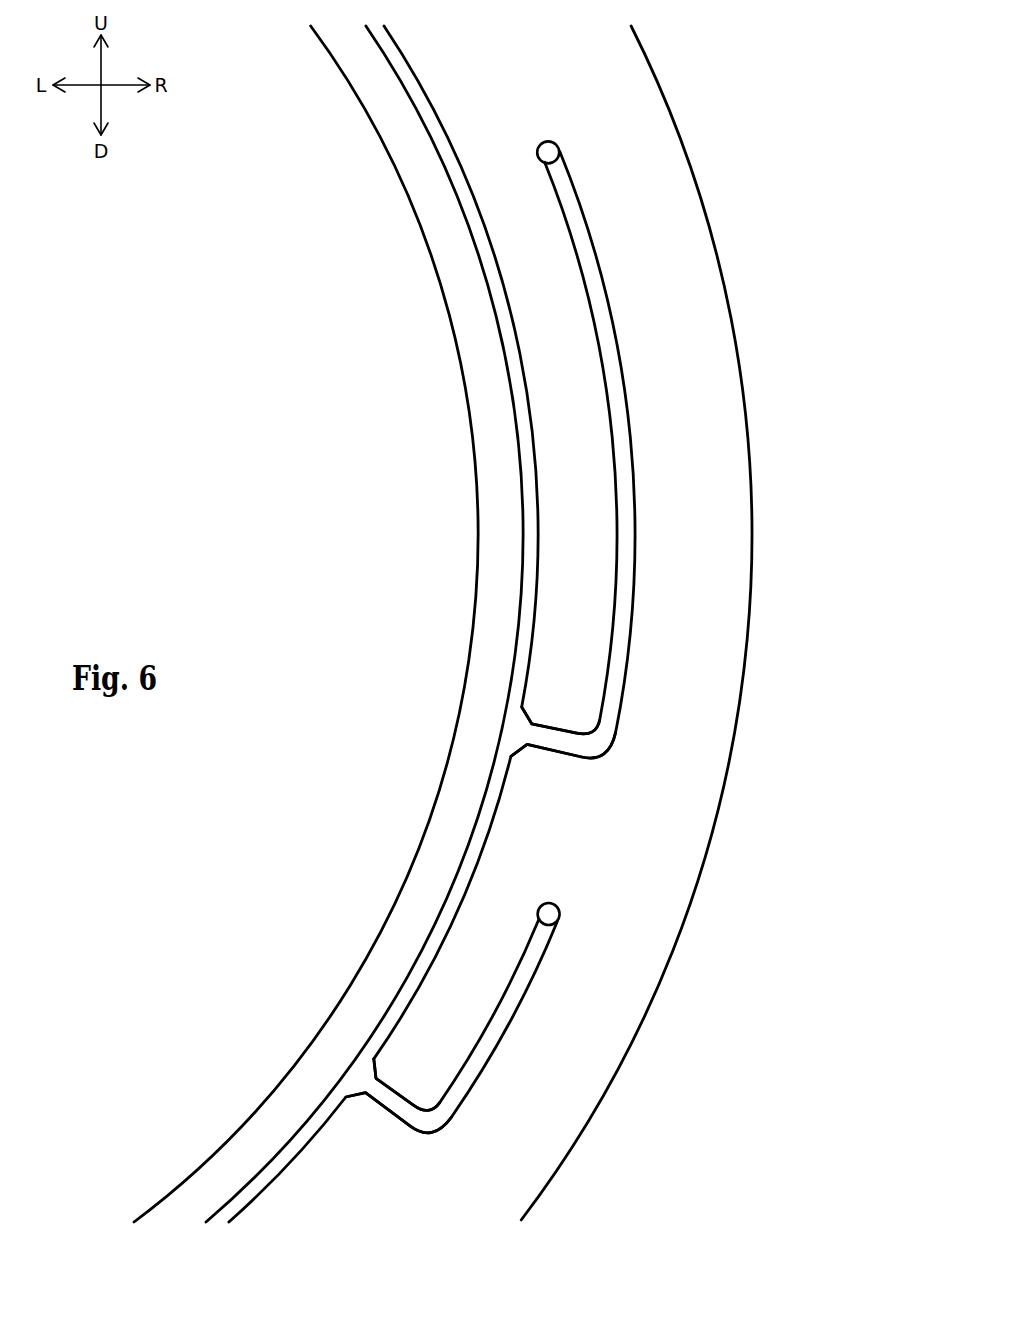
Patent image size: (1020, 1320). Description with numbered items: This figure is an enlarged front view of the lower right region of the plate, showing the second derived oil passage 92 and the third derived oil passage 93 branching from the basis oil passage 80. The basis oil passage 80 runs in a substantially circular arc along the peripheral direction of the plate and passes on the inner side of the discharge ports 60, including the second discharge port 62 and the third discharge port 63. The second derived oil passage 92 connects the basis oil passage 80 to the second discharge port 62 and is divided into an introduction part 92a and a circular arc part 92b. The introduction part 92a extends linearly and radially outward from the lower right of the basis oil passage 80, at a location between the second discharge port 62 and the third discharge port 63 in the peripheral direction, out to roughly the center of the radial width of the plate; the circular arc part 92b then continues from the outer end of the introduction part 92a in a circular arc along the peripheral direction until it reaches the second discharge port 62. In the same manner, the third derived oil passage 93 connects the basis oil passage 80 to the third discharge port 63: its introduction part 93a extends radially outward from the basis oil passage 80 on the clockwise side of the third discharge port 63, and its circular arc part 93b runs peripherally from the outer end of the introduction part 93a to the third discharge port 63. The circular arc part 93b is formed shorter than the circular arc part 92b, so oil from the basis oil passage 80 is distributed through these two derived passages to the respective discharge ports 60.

The discharge ports 60 is at (683, 492).
The second discharge port 62 is at (547, 141).
The third discharge port 63 is at (549, 904).
The basis oil passage 80 is at (512, 357).
The second derived oil passage 92 is at (576, 542).
The introduction part 92a is at (553, 743).
The circular arc part 92b is at (609, 360).
The third derived oil passage 93 is at (449, 1070).
The introduction part 93a is at (392, 1103).
The circular arc part 93b is at (496, 1030).